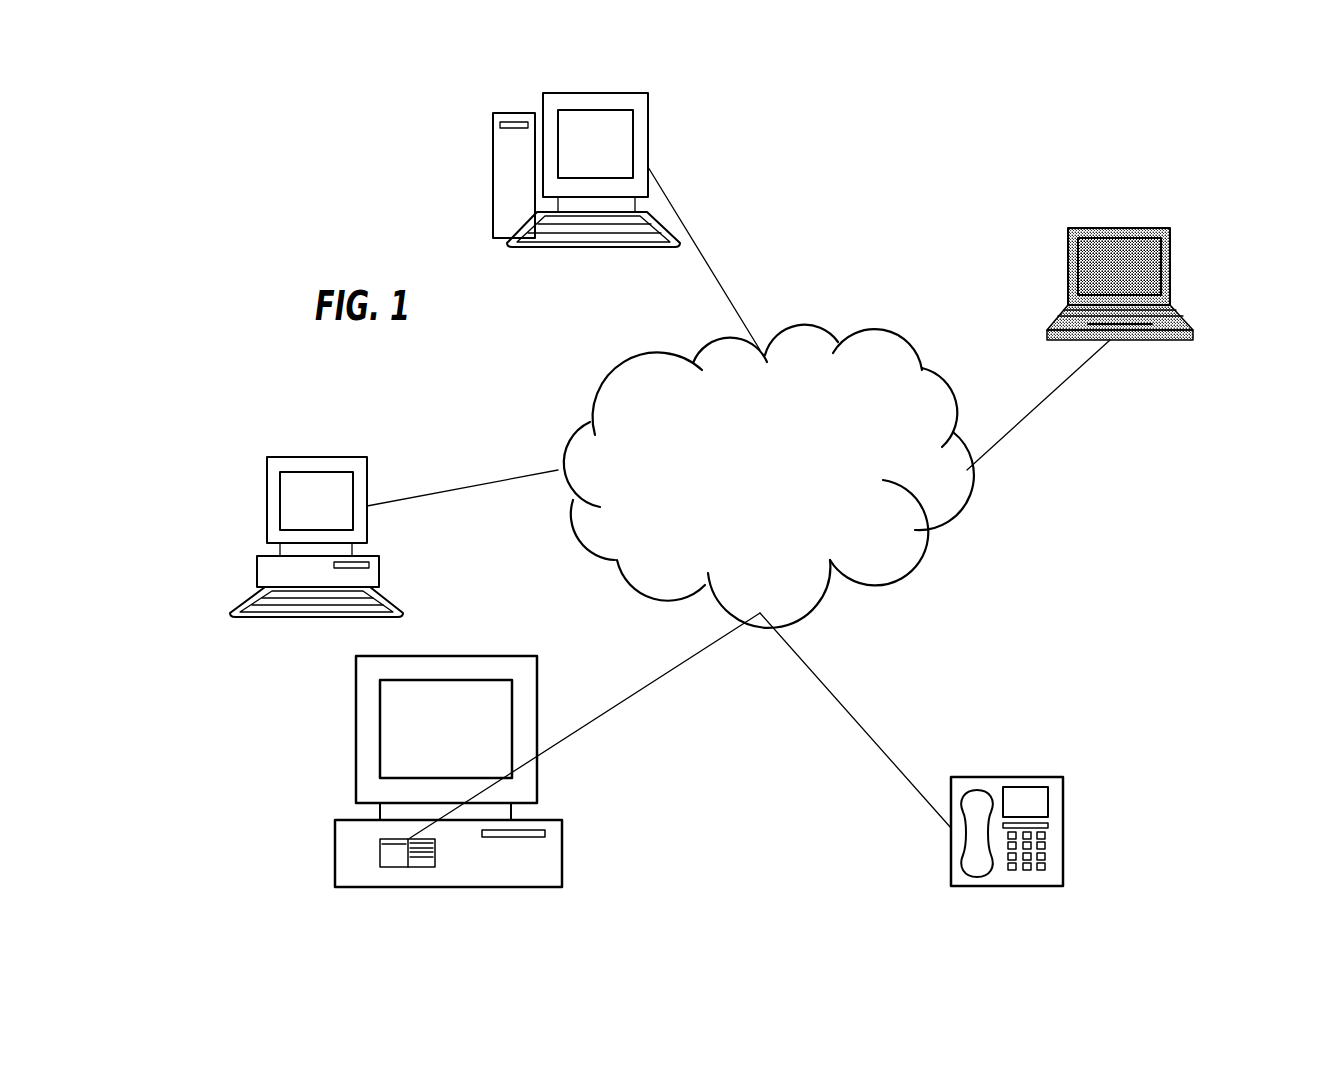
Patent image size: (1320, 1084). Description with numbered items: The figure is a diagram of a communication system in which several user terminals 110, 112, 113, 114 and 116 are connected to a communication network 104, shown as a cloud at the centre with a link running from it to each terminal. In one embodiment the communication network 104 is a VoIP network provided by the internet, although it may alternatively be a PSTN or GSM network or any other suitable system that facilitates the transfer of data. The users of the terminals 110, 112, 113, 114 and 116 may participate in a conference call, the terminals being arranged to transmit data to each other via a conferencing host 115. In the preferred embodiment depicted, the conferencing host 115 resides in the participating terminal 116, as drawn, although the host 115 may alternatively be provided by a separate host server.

The communication network 104 is at (787, 467).
The user terminal 110 is at (648, 127).
The user terminal 112 is at (1170, 257).
The user terminal 113 is at (1063, 802).
The user terminal 114 is at (267, 478).
The conferencing host 115 is at (380, 852).
The user terminal 116 is at (356, 725).